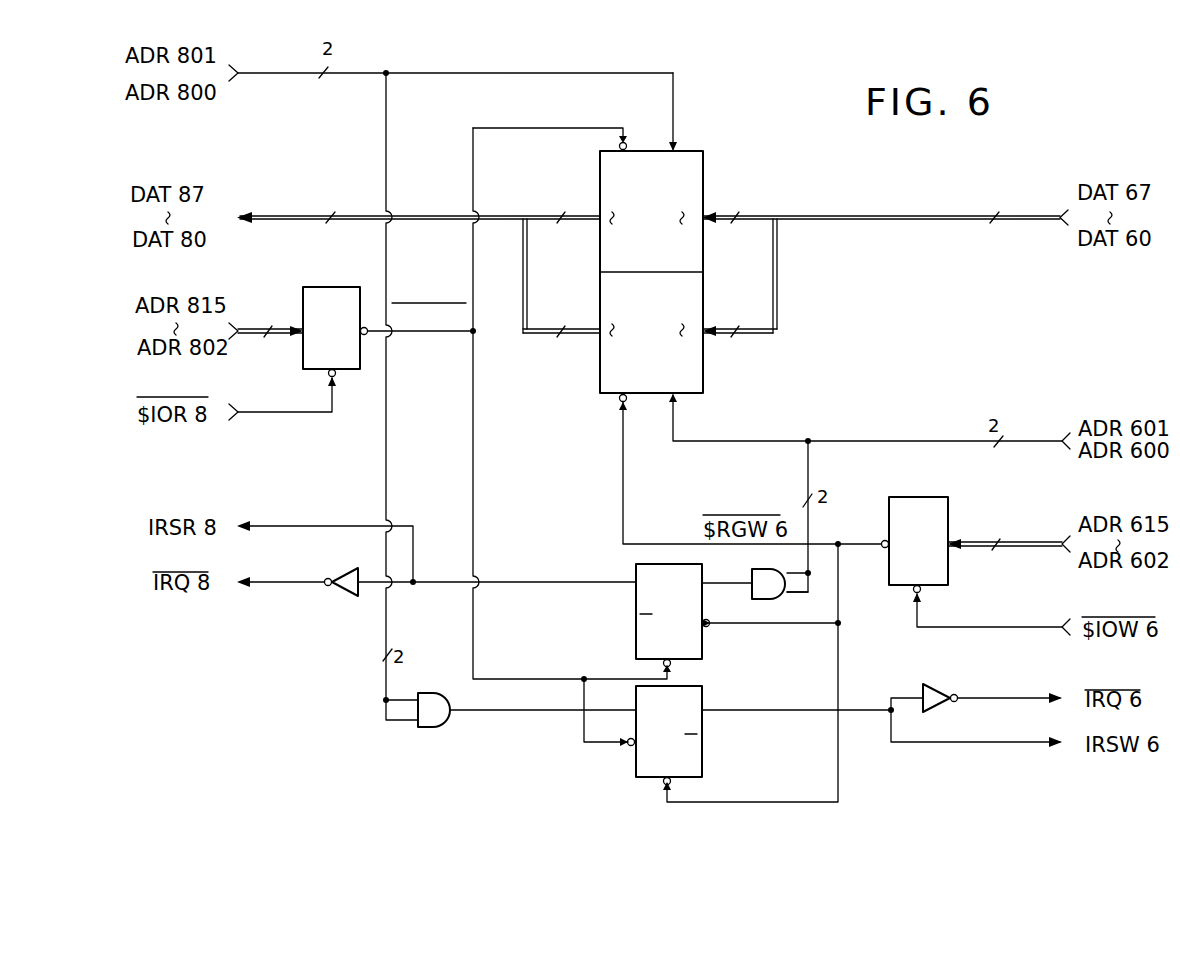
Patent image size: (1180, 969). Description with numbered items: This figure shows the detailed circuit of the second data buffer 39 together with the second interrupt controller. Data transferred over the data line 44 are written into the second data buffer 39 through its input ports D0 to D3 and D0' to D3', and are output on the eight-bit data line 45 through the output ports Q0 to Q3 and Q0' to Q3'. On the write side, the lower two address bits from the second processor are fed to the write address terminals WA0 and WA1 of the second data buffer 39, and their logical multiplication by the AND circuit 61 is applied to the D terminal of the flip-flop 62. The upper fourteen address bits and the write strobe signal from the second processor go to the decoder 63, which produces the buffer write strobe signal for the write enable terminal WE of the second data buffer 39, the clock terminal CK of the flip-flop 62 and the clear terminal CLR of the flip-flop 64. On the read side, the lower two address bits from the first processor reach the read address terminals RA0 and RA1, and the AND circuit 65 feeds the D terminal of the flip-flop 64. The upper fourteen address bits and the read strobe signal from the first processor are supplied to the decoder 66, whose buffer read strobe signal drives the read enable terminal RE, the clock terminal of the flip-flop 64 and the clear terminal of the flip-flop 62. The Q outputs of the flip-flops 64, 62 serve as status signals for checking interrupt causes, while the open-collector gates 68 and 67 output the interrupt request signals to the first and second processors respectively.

The second data buffer 39 is at (712, 152).
The data line 44 is at (890, 215).
The data line 45 is at (432, 214).
The AND circuit 61 is at (752, 575).
The flip-flop 62 is at (636, 574).
The decoder 63 is at (926, 497).
The flip-flop 64 is at (703, 704).
The AND circuit 65 is at (450, 730).
The decoder 66 is at (341, 287).
The open-collector gate 67 is at (940, 686).
The open-collector gate 68 is at (350, 598).